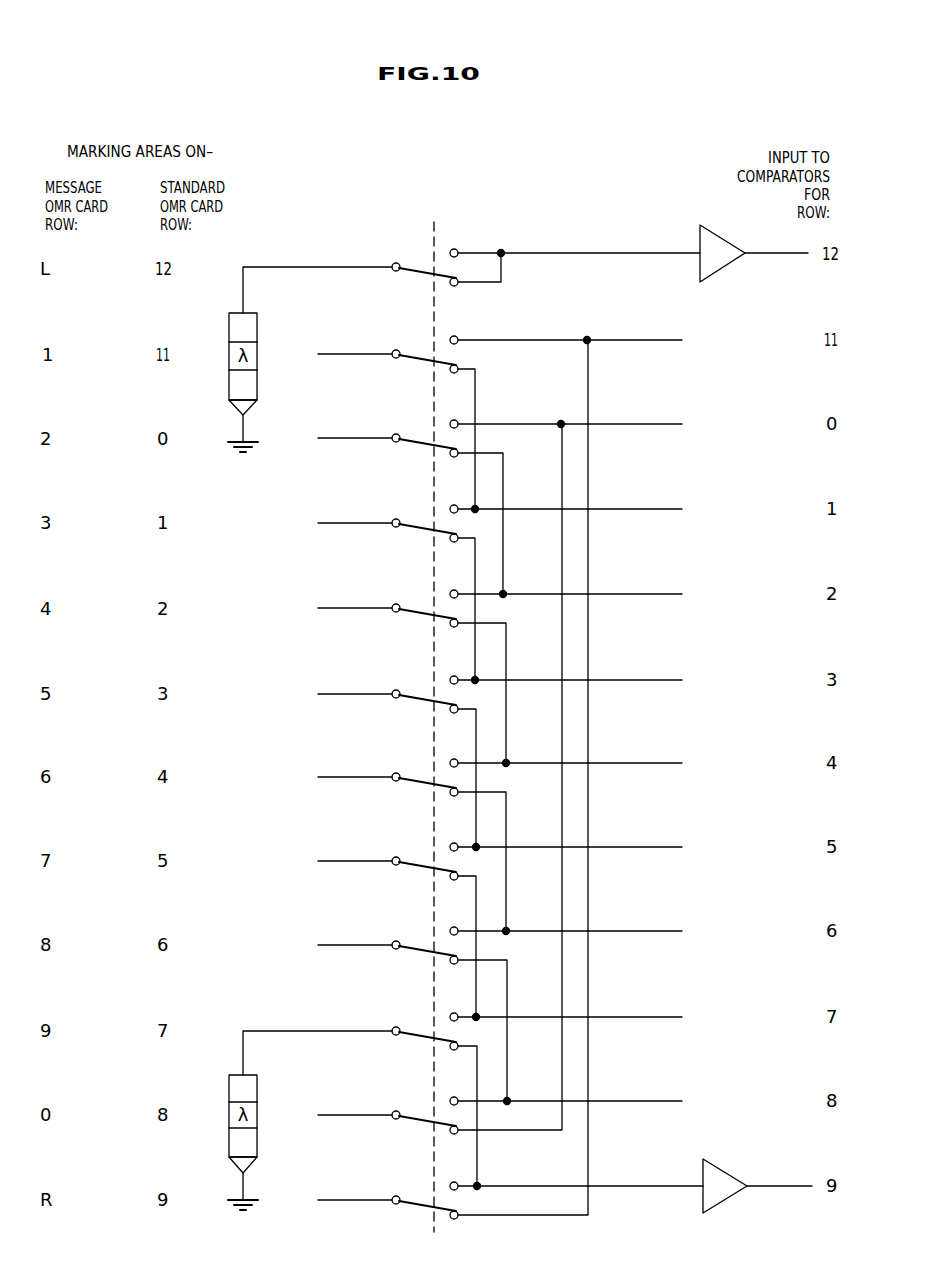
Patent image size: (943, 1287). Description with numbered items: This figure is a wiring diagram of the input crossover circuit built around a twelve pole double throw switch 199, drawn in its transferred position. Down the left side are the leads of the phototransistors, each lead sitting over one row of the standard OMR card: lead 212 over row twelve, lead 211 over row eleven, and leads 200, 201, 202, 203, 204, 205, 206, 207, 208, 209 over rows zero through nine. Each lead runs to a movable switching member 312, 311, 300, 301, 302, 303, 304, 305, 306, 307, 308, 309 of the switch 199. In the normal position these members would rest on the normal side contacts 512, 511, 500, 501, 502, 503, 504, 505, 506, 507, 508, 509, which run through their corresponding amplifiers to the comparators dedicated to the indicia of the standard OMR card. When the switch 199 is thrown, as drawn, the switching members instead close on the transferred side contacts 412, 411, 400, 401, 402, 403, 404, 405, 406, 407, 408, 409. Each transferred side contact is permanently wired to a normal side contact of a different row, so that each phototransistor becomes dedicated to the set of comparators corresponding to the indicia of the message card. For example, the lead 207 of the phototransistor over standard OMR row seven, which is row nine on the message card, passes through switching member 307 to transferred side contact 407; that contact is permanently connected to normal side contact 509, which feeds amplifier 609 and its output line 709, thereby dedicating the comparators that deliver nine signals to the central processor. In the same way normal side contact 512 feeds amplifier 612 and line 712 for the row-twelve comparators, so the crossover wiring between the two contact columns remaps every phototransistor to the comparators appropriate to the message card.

The twelve pole double throw switch 199 is at (429, 239).
The phototransistor lead 200 is at (369, 440).
The phototransistor lead 201 is at (361, 524).
The phototransistor lead 202 is at (369, 611).
The phototransistor lead 203 is at (369, 695).
The phototransistor lead 204 is at (369, 776).
The phototransistor lead 205 is at (367, 860).
The phototransistor lead 206 is at (369, 944).
The phototransistor lead 207 is at (369, 1031).
The phototransistor lead 208 is at (369, 1114).
The phototransistor lead 209 is at (367, 1201).
The phototransistor lead 211 is at (369, 354).
The phototransistor lead 212 is at (319, 267).
The switching member 300 is at (414, 447).
The switching member 301 is at (416, 533).
The switching member 302 is at (414, 618).
The switching member 303 is at (434, 692).
The switching member 304 is at (412, 784).
The switching member 305 is at (424, 867).
The switching member 306 is at (424, 952).
The switching member 307 is at (426, 1039).
The switching member 308 is at (424, 1129).
The switching member 309 is at (429, 1211).
The switching member 311 is at (424, 365).
The switching member 312 is at (420, 278).
The transferred side contact 400 is at (461, 456).
The transferred side contact 401 is at (463, 543).
The transferred side contact 402 is at (463, 628).
The transferred side contact 403 is at (463, 716).
The transferred side contact 404 is at (463, 799).
The transferred side contact 405 is at (463, 885).
The transferred side contact 406 is at (463, 970).
The transferred side contact 407 is at (466, 1054).
The transferred side contact 408 is at (466, 1141).
The transferred side contact 409 is at (452, 1225).
The transferred side contact 411 is at (468, 370).
The transferred side contact 412 is at (462, 286).
The normal side contact 500 is at (611, 427).
The normal side contact 501 is at (611, 514).
The normal side contact 502 is at (611, 599).
The normal side contact 503 is at (611, 685).
The normal side contact 504 is at (616, 769).
The normal side contact 505 is at (616, 852).
The normal side contact 506 is at (616, 937).
The normal side contact 507 is at (613, 1022).
The normal side contact 508 is at (609, 1100).
The normal side contact 509 is at (609, 1187).
The normal side contact 511 is at (611, 342).
The normal side contact 512 is at (558, 257).
The amplifier 609 is at (720, 1209).
The amplifier 612 is at (714, 275).
The line 709 is at (775, 1185).
The line 712 is at (772, 257).